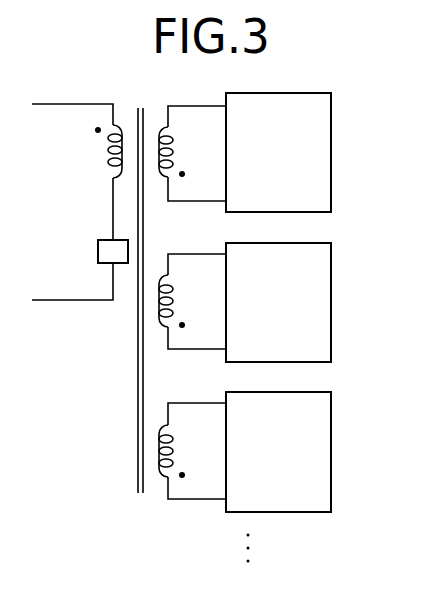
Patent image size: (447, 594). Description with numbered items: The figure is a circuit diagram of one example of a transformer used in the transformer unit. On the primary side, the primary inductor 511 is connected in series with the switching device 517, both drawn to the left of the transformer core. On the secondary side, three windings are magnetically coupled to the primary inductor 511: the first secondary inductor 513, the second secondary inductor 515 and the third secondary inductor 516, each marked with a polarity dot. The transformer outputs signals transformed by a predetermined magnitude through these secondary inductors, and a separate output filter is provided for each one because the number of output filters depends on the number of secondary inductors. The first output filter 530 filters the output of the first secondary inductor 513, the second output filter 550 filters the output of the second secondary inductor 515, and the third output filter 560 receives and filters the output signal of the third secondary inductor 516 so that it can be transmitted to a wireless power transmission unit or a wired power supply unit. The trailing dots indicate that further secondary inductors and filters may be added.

The primary inductor 511 is at (94, 151).
The first secondary inductor 513 is at (185, 152).
The second secondary inductor 515 is at (185, 301).
The third secondary inductor 516 is at (185, 451).
The switching device 517 is at (99, 266).
The first output filter 530 is at (331, 150).
The second output filter 550 is at (331, 300).
The third output filter 560 is at (331, 450).